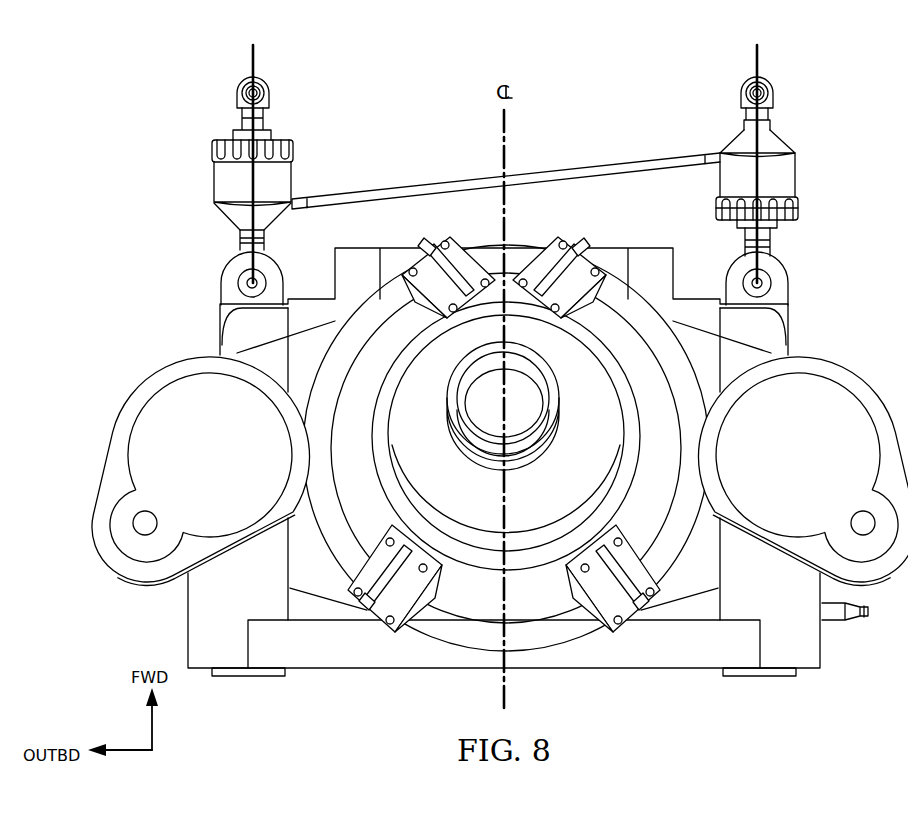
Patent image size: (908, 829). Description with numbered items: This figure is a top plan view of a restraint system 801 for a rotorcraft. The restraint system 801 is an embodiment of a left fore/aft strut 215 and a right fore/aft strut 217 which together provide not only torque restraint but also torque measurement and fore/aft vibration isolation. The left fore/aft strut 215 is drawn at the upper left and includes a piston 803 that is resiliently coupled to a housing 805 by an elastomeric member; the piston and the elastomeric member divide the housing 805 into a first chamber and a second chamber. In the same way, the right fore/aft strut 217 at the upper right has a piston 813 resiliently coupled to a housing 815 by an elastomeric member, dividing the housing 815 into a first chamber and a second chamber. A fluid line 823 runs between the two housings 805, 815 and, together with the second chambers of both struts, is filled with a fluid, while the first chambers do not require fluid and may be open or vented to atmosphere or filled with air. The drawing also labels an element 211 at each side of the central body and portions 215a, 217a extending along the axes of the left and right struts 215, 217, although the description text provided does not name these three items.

The restraint system 801 is at (622, 50).
The mounting ear 211 is at (108, 448).
The left fore/aft strut 215 is at (203, 124).
The first actuator rod 215a is at (250, 58).
The piston 803 is at (273, 93).
The housing 805 is at (292, 180).
The right fore/aft strut 217 is at (803, 92).
The second actuator rod 217a is at (753, 58).
The piston 813 is at (740, 95).
The housing 815 is at (719, 178).
The fluid line 823 is at (438, 183).